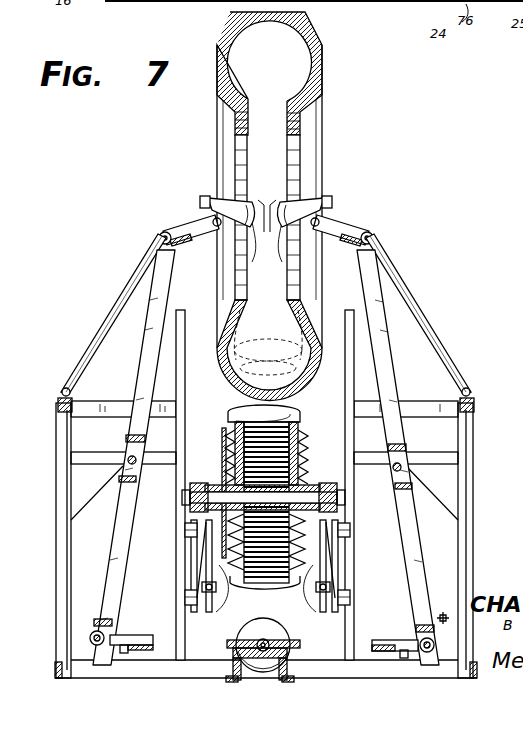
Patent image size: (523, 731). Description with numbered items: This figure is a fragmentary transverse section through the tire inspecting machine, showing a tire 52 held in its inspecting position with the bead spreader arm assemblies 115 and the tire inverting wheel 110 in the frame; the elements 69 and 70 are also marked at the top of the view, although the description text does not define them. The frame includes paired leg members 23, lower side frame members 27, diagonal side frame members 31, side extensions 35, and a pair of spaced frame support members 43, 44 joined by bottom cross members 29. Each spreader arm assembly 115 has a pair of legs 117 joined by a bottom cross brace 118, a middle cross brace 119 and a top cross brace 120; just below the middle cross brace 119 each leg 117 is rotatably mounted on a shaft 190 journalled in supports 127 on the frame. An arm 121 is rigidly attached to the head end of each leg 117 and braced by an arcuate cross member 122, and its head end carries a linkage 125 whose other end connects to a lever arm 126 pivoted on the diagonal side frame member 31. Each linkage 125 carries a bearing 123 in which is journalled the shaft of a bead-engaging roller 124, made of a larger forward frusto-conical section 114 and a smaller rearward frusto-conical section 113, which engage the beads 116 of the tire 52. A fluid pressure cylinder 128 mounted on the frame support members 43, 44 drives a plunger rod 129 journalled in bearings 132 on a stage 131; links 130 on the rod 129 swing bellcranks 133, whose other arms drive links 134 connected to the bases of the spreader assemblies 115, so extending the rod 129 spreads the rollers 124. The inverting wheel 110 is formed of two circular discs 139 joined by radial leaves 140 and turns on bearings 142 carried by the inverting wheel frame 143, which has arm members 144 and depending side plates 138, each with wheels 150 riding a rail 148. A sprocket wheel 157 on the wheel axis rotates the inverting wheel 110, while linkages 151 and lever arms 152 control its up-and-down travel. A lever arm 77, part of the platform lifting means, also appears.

The tube head 69 is at (258, 4).
The tube walls 70 is at (218, 48).
The tire 52 is at (215, 156).
The beads 116 is at (237, 122).
The rearward frusto-conical section 113 is at (236, 240).
The tire inverting wheel 110 is at (302, 424).
The bead-engaging roller 124 is at (264, 200).
The forward frusto-conical section 114 is at (266, 230).
The bearing 123 is at (222, 205).
The arm 121 is at (206, 203).
The arcuate cross member 122 is at (175, 232).
The linkage 125 is at (195, 222).
The top cross brace 120 is at (160, 248).
The leg member 23 is at (60, 522).
The bottom cross member 29 is at (135, 670).
The lower side frame member 27 is at (56, 666).
The side extension 35 is at (104, 400).
The support 127 is at (75, 476).
The diagonal side frame member 31 is at (58, 412).
The leg 117 is at (163, 303).
The lever arm 126 is at (108, 322).
The bead spreader arm assembly 115 is at (141, 346).
The middle cross brace 119 is at (128, 437).
The shaft 190 is at (137, 465).
The bottom cross brace 118 is at (140, 612).
The lever arm 77 is at (443, 612).
The link 134 is at (128, 640).
The bellcrank 133 is at (150, 650).
The leaf 140 is at (240, 417).
The circular disc 139 is at (236, 431).
The sprocket wheel 157 is at (223, 449).
The rail 148 is at (224, 474).
The bearing 142 is at (208, 486).
The inverting wheel frame 143 is at (203, 530).
The side plate 138 is at (200, 578).
The wheel 150 is at (196, 553).
The arm member 144 is at (200, 560).
The lever arm 152 is at (281, 598).
The linkage 151 is at (300, 608).
The piston-equipped plunger rod 129 is at (262, 640).
The fluid pressure cylinder 128 is at (292, 630).
The link 130 is at (232, 640).
The stage 131 is at (236, 658).
The bearing 132 is at (290, 658).
The frame support member 43 is at (237, 680).
The frame support member 44 is at (285, 680).